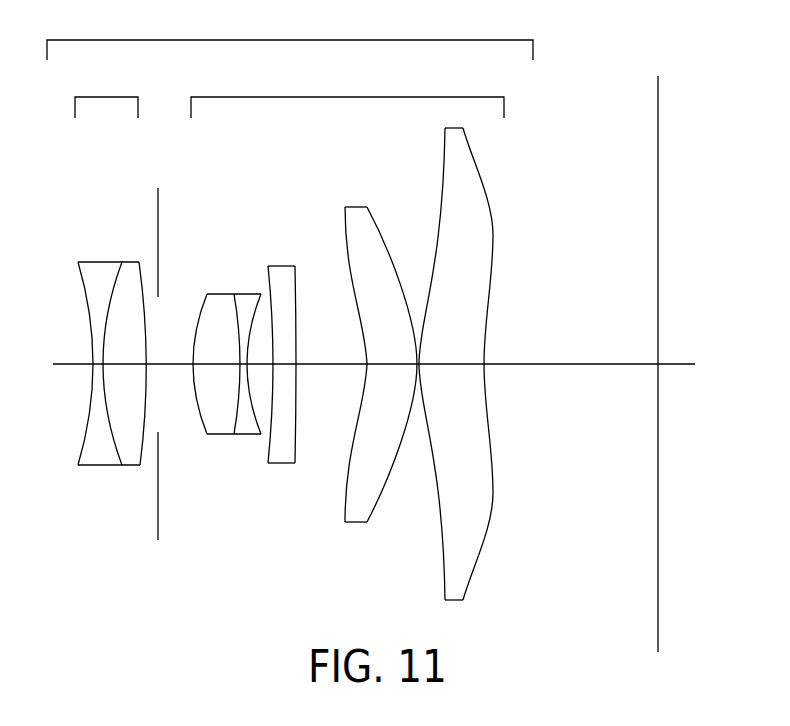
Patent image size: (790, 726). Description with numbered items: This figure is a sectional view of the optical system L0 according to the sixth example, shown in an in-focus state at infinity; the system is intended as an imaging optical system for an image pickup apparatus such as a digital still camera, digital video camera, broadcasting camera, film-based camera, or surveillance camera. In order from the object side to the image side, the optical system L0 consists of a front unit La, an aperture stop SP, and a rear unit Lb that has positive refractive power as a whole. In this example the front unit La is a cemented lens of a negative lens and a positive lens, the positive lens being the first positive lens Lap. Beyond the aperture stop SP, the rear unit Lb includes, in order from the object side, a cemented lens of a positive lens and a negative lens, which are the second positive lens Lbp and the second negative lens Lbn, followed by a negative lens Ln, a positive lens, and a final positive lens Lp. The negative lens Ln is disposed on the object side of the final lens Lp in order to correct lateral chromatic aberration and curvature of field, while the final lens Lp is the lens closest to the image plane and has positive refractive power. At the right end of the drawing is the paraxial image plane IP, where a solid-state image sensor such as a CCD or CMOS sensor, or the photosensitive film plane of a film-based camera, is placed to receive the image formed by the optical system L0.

The optical system L0 is at (290, 36).
The front unit La is at (106, 91).
The rear unit Lb is at (347, 91).
The positive lens Lap is at (130, 465).
The aperture stop SP is at (158, 208).
The positive lens Lbp is at (215, 434).
The negative lens Lbn is at (245, 434).
The negative lens Ln is at (290, 462).
The final lens Lp is at (445, 595).
The image plane IP is at (658, 95).